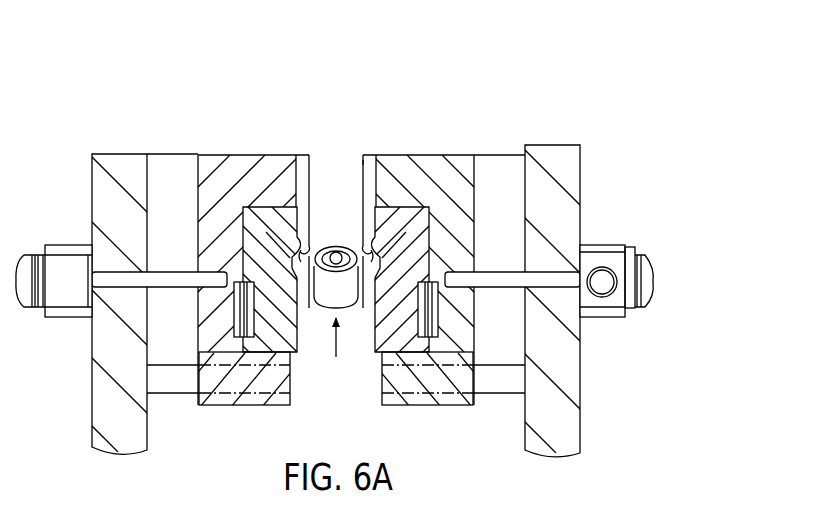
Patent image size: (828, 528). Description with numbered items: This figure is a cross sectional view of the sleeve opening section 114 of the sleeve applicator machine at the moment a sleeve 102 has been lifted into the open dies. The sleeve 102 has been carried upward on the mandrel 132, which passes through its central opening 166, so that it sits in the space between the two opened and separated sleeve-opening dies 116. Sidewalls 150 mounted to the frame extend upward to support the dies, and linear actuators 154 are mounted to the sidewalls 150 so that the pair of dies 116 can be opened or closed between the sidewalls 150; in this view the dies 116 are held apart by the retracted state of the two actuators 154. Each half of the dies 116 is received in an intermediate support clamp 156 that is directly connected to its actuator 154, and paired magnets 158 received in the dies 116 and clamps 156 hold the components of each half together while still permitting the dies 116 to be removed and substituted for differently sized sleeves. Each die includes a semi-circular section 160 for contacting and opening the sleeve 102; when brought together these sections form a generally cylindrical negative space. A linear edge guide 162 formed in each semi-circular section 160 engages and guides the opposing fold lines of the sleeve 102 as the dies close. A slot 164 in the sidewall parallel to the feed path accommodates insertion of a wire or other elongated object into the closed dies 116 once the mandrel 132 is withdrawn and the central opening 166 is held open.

The sleeve 102 is at (340, 246).
The sleeve opening section 114 is at (406, 120).
The sleeve-opening dies 116 is at (386, 344).
The mandrel 132 is at (353, 332).
The sidewalls 150 is at (106, 191).
The linear actuators 154 is at (70, 318).
The support clamps 156 is at (258, 170).
The magnets 158 is at (238, 325).
The semi-circular section 160 is at (363, 244).
The linear edge guide 162 is at (283, 256).
The slot 164 is at (362, 168).
The central opening 166 is at (328, 299).